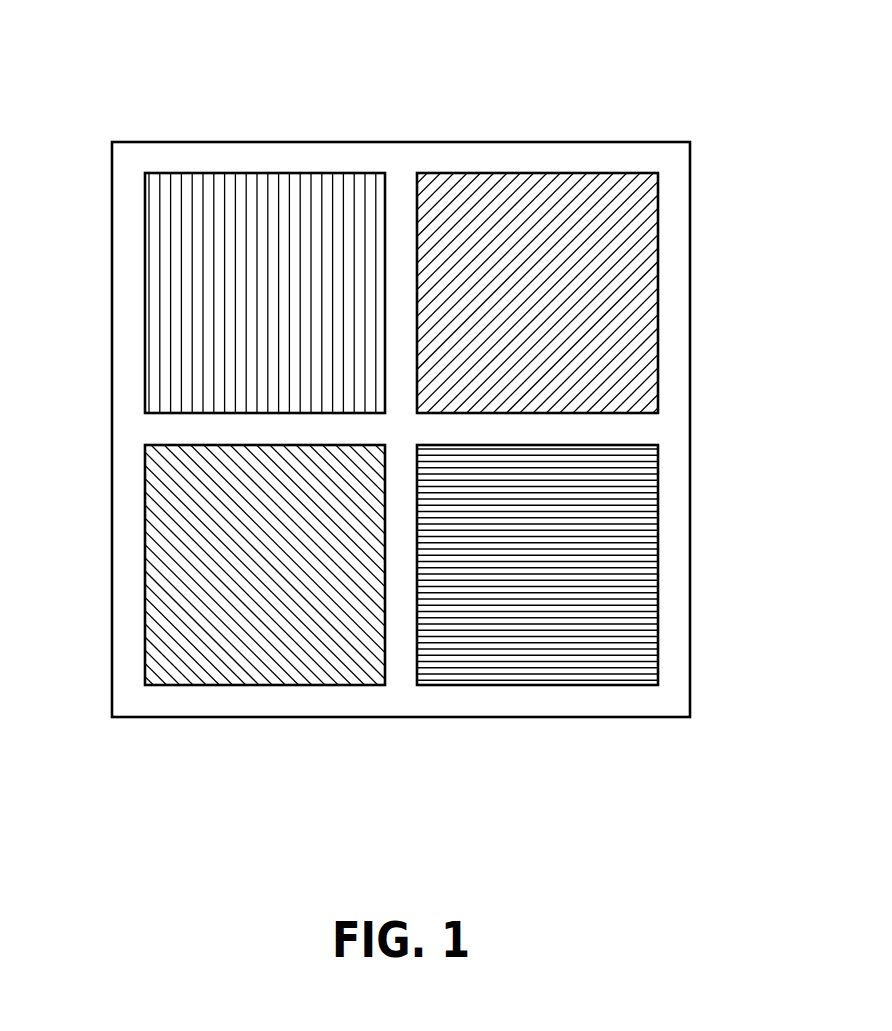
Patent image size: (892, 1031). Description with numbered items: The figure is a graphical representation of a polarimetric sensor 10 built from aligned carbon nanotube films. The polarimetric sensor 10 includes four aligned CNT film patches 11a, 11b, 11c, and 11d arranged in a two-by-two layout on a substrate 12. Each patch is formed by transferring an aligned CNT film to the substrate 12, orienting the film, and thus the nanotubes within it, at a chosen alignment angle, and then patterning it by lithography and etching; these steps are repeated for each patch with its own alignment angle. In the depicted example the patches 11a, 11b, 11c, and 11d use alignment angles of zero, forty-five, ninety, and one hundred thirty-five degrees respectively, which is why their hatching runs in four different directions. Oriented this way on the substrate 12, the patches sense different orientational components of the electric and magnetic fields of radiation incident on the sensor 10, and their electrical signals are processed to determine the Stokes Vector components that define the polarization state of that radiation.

The polarimetric sensor 10 is at (830, 44).
The aligned CNT film patch 11a is at (250, 222).
The aligned CNT film patch 11b is at (575, 190).
The aligned CNT film patch 11c is at (628, 639).
The aligned CNT film patch 11d is at (160, 605).
The substrate 12 is at (243, 709).